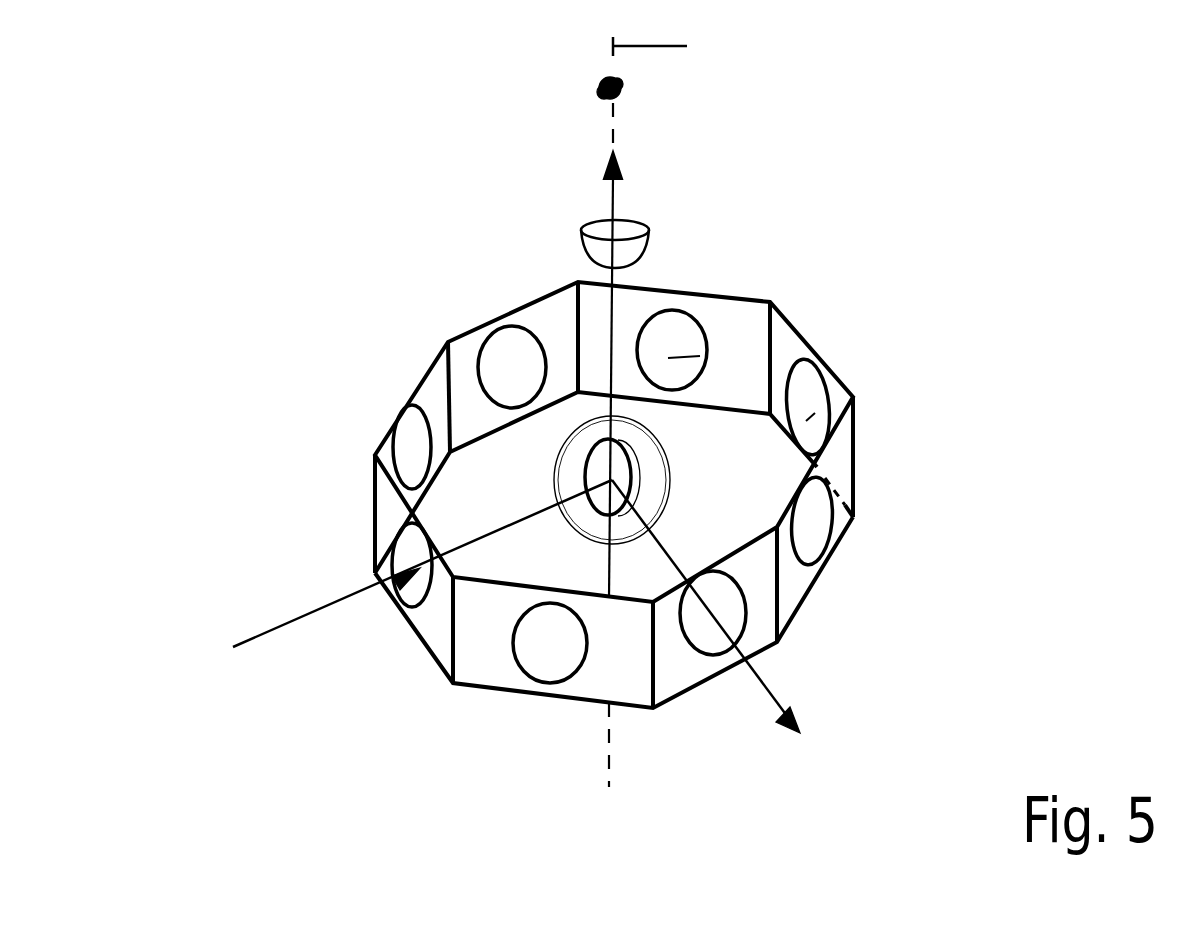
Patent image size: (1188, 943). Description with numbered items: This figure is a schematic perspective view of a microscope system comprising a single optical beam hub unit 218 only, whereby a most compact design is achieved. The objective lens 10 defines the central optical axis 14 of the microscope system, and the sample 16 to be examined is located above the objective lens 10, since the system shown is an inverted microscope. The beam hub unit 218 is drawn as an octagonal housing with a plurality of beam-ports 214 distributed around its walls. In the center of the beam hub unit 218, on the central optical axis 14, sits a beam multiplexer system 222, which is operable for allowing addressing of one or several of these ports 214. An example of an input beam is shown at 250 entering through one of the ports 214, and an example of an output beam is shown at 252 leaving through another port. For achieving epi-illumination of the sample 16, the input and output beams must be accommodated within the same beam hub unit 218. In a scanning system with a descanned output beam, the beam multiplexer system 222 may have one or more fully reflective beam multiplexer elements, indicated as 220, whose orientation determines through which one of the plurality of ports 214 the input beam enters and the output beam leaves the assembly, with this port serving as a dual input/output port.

The objective lens 10 is at (643, 237).
The central optical axis 14 is at (675, 47).
The sample 16 is at (635, 85).
The beam-ports 214 is at (413, 460).
The optical beam hub unit 218 is at (387, 520).
The beam multiplexer element 220 is at (618, 477).
The beam multiplexer system 222 is at (573, 460).
The input beam 250 is at (383, 578).
The output beam 252 is at (732, 632).